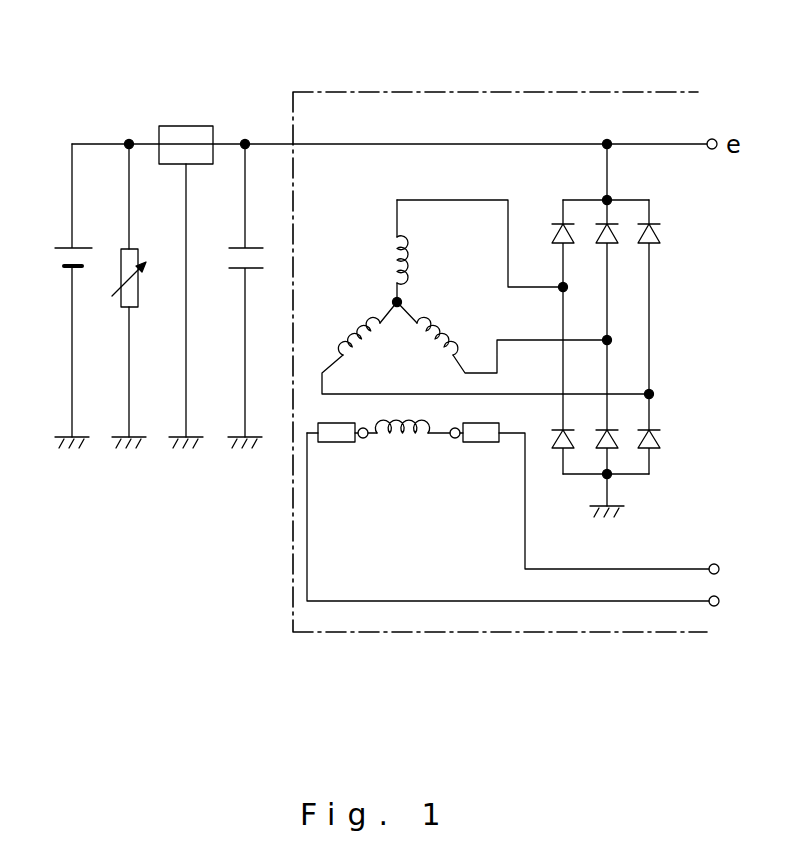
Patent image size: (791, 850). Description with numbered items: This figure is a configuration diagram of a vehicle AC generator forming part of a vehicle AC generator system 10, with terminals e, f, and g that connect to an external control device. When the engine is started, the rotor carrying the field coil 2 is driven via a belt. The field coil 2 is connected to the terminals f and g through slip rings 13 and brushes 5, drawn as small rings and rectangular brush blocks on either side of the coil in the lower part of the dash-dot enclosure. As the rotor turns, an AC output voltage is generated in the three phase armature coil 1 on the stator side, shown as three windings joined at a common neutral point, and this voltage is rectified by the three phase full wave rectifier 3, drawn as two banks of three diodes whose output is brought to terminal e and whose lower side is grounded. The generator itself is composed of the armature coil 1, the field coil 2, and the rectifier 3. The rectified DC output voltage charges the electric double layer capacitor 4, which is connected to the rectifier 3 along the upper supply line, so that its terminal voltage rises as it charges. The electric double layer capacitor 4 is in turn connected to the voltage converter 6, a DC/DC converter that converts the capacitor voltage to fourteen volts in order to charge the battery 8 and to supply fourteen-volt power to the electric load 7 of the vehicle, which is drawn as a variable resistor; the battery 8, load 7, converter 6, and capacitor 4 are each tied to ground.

The three phase armature coil 1 is at (380, 260).
The field coil 2 is at (400, 445).
The three phase full wave rectifier 3 is at (580, 190).
The electric double layer capacitor 4 is at (257, 246).
The brushes 5 is at (333, 443).
The voltage converter 6 is at (184, 126).
The electric load 7 is at (121, 244).
The battery 8 is at (60, 245).
The vehicle AC generator system 10 is at (643, 92).
The slip rings 13 is at (362, 440).